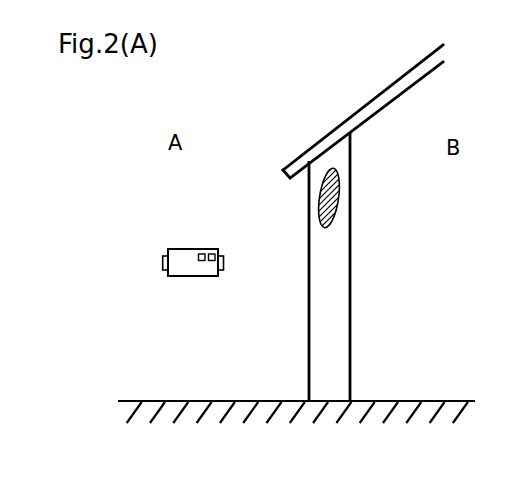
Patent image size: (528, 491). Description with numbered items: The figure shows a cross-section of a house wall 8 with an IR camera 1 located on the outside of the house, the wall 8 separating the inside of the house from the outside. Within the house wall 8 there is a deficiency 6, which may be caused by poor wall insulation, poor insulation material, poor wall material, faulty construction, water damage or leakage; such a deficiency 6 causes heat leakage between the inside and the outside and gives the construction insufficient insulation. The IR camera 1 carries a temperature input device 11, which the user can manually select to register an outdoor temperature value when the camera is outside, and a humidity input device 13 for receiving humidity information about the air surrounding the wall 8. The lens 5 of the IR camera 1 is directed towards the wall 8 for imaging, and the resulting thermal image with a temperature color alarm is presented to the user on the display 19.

The IR camera 1 is at (180, 249).
The temperature input device 11 is at (200, 254).
The humidity input device 13 is at (211, 254).
The display 19 is at (163, 262).
The lens 5 is at (224, 265).
The deficiency 6 is at (333, 168).
The house wall 8 is at (329, 267).